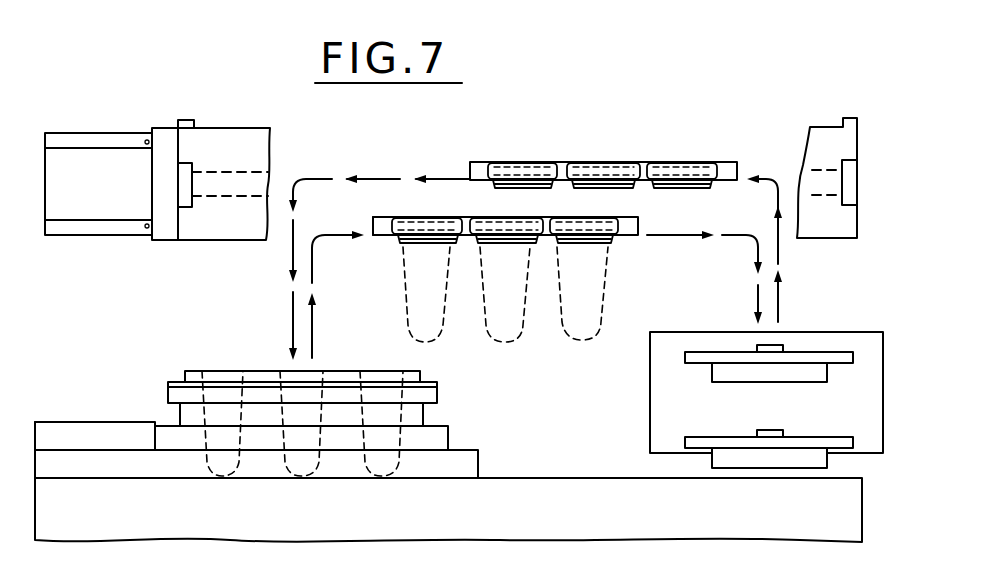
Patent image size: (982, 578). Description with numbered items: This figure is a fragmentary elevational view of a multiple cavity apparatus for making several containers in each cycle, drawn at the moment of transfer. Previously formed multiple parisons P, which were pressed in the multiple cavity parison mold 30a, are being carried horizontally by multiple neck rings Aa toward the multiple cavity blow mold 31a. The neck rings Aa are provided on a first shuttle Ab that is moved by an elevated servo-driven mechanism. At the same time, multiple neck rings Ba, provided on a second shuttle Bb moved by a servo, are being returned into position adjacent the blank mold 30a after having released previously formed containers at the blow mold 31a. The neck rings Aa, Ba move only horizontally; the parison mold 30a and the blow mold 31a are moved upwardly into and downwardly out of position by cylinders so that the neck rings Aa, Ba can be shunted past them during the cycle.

The multiple neck rings Ba is at (520, 162).
The second shuttle Bb is at (740, 149).
The multiple neck rings Aa is at (620, 238).
The first shuttle Ab is at (372, 220).
The parisons P is at (440, 337).
The multiple cavity parison mold 30a is at (423, 413).
The multiple cavity blow mold 31a is at (822, 312).